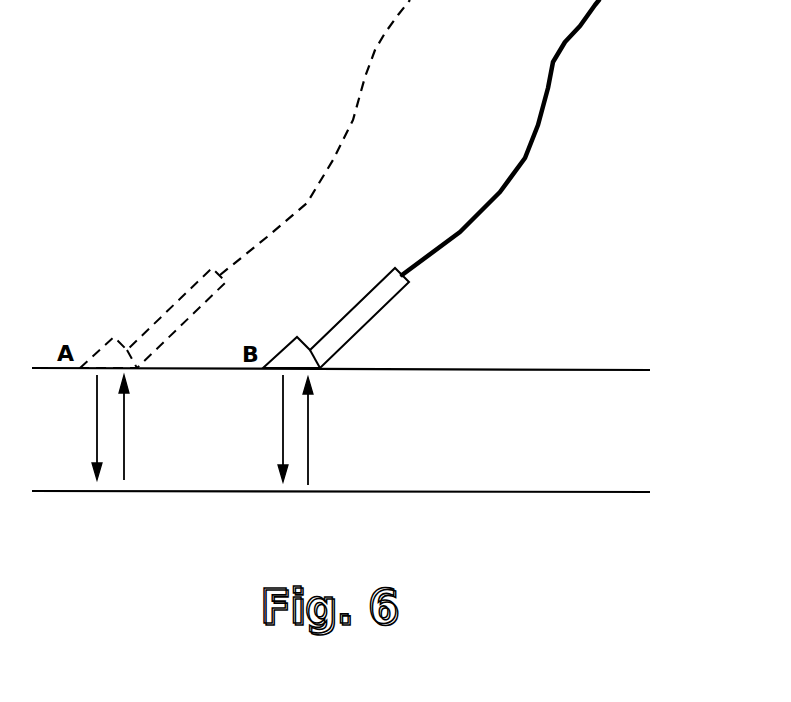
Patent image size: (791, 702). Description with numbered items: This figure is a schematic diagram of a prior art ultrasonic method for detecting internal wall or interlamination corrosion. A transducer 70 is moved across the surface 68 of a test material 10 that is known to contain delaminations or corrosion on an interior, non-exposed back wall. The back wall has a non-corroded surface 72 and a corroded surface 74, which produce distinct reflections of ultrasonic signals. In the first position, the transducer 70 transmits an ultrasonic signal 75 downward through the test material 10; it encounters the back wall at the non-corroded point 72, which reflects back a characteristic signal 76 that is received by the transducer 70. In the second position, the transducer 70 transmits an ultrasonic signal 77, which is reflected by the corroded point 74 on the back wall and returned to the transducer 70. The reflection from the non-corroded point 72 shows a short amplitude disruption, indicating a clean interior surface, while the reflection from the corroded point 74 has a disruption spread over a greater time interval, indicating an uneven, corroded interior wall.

The test material 10 is at (518, 448).
The surface 68 is at (308, 417).
The transducer 70 is at (376, 285).
The non-corroded surface 72 is at (119, 503).
The corroded surface 74 is at (312, 503).
The ultrasonic signal 75 is at (97, 417).
The characteristic signal 76 is at (124, 425).
The ultrasonic signal 77 is at (283, 408).